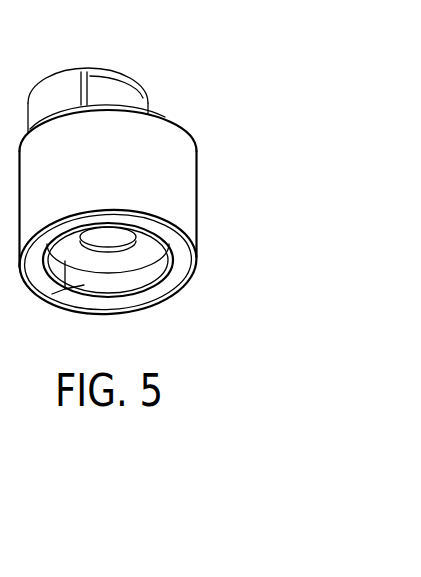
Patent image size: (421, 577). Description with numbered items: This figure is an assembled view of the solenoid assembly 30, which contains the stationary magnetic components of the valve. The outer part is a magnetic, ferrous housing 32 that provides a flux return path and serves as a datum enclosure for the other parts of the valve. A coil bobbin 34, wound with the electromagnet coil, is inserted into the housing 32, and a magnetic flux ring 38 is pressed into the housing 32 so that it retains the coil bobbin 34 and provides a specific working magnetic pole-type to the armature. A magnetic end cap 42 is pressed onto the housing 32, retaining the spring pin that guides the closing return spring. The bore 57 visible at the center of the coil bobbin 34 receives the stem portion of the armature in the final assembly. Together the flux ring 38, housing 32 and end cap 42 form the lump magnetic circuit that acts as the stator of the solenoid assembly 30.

The solenoid assembly 30 is at (209, 121).
The magnetic housing 32 is at (191, 193).
The coil bobbin 34 is at (92, 258).
The magnetic flux ring 38 is at (172, 285).
The magnetic end cap 42 is at (133, 90).
The bore 57 is at (87, 243).